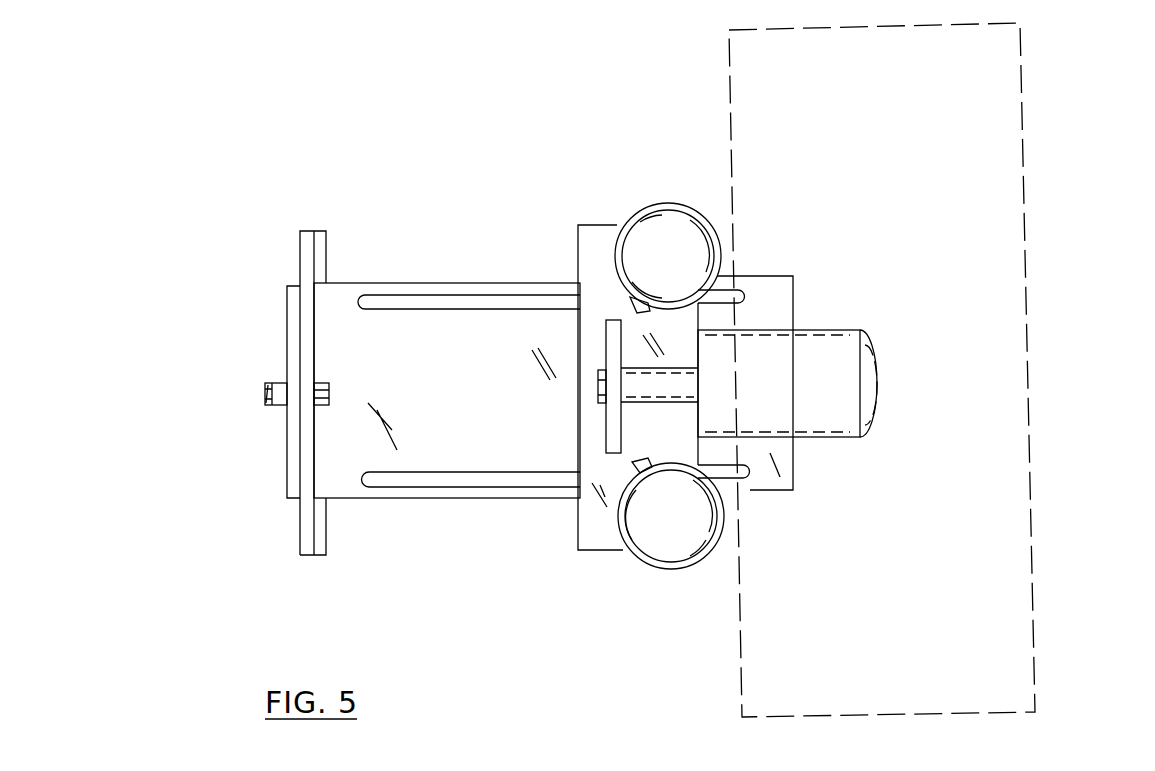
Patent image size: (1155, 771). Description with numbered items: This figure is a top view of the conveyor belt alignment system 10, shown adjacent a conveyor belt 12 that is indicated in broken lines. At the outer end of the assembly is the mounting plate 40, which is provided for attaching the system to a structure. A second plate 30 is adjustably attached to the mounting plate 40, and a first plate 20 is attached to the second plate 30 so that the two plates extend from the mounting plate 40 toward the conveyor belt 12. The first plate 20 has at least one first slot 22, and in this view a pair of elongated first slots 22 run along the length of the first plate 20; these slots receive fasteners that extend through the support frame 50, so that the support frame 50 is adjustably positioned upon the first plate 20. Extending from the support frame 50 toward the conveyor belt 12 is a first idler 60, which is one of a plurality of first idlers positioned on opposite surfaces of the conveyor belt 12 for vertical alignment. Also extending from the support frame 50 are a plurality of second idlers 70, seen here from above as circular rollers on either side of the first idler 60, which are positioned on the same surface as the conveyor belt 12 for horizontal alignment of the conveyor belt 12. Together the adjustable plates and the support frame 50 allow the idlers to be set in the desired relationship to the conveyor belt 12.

The conveyor belt alignment system 10 is at (308, 106).
The conveyor belt 12 is at (992, 245).
The first plate 20 is at (345, 492).
The first slot 22 is at (460, 476).
The second plate 30 is at (290, 305).
The mounting plate 40 is at (305, 250).
The support frame 50 is at (613, 326).
The first idler 60 is at (853, 427).
The second idler 70 is at (665, 208).